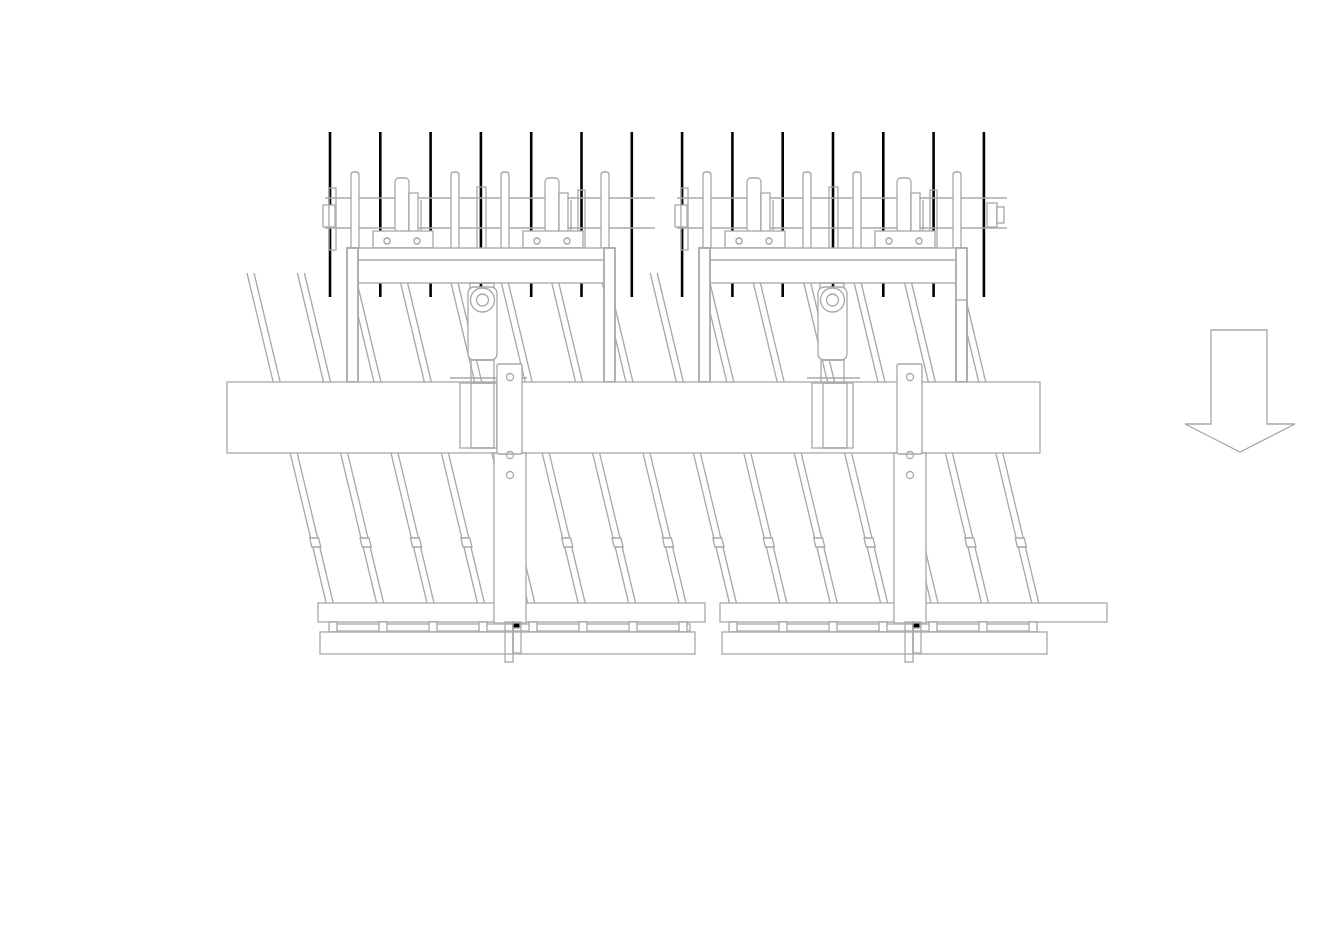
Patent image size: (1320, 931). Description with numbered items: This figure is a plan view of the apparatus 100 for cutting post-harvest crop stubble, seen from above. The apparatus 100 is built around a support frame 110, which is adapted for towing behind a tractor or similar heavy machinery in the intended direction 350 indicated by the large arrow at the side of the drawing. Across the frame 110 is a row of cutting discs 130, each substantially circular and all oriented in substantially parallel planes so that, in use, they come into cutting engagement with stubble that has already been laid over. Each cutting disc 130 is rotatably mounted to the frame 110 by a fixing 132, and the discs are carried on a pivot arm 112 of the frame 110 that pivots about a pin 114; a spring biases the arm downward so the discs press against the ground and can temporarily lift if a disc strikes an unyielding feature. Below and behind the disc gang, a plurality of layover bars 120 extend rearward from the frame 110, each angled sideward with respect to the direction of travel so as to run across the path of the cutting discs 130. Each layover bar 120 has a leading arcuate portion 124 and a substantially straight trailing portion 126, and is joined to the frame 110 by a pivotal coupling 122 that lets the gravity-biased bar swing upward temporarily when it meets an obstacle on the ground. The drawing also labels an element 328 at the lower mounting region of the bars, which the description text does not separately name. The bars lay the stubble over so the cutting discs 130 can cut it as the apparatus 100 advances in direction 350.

The apparatus 100 is at (303, 98).
The support frame 110 is at (291, 232).
The pivot arm 112 is at (963, 293).
The pin 114 is at (976, 363).
The layover bars 120 is at (300, 508).
The pivotal coupling 122 is at (333, 636).
The leading arcuate portion 124 is at (318, 600).
The trailing portion 126 is at (256, 312).
The cutting discs 130 is at (783, 142).
The fixing 132 is at (998, 207).
The mounting post 328 is at (489, 641).
The intended direction 350 is at (1228, 350).